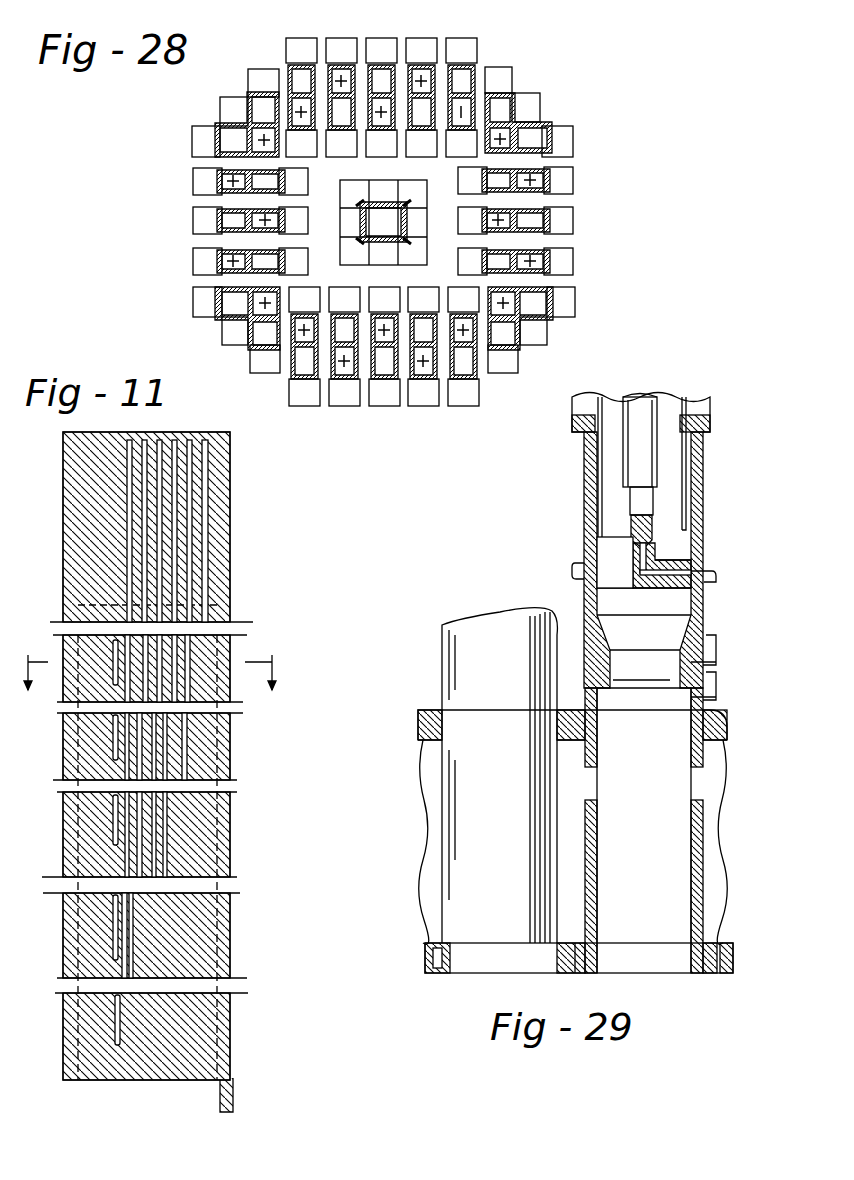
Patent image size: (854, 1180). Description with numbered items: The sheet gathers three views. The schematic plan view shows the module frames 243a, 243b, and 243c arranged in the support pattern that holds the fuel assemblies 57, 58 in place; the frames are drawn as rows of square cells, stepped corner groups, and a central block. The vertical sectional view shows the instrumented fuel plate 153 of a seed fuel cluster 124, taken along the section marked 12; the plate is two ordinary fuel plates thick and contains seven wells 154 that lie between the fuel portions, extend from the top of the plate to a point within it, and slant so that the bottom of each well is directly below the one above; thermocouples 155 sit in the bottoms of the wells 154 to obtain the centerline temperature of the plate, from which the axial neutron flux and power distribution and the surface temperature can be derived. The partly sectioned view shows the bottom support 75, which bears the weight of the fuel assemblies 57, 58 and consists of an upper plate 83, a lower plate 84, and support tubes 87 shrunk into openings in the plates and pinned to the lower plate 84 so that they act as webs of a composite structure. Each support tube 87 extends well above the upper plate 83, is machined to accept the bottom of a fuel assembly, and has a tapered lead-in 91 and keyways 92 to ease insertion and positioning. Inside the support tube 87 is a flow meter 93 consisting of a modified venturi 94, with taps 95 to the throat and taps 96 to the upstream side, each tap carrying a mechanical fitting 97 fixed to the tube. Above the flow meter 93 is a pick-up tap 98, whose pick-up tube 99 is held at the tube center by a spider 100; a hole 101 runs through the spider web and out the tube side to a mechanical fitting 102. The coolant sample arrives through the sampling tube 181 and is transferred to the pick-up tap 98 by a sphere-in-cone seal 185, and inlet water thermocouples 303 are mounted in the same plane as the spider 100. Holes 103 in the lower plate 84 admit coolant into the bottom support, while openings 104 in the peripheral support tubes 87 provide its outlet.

In FIG. 28, the module frame 243a is at (417, 50).
In FIG. 28, the module frame 243b is at (247, 113).
In FIG. 28, the module frame 243c is at (378, 204).
In FIG. 11, the seed fuel cluster 124 is at (182, 772).
In FIG. 11, the instrumented fuel plate 153 is at (240, 485).
In FIG. 11, the wells 154 is at (150, 545).
In FIG. 11, the thermocouples 155 is at (113, 815).
In FIG. 11, the section line 12 is at (145, 688).
In FIG. 29, the fuel assembly 57 is at (705, 398).
In FIG. 29, the fuel assembly 58 is at (715, 372).
In FIG. 29, the sampling tube 181 is at (640, 400).
In FIG. 29, the tapered lead-in 91 is at (584, 448).
In FIG. 29, the keyways 92 is at (703, 452).
In FIG. 29, the sphere-in-cone seal 185 is at (662, 530).
In FIG. 29, the pick-up tap 98 is at (665, 556).
In FIG. 29, the pick-up tube 99 is at (637, 560).
In FIG. 29, the hole 101 is at (691, 572).
In FIG. 29, the mechanical fitting 102 is at (704, 581).
In FIG. 29, the thermocouples 303 is at (573, 574).
In FIG. 29, the spider 100 is at (640, 590).
In FIG. 29, the support tubes 87 is at (703, 620).
In FIG. 29, the mechanical fittings 97 is at (716, 648).
In FIG. 29, the taps 95 is at (691, 664).
In FIG. 29, the taps 96 is at (716, 680).
In FIG. 29, the modified venturi 94 is at (657, 688).
In FIG. 29, the flow meter 93 is at (636, 698).
In FIG. 29, the bottom support 75 is at (434, 688).
In FIG. 29, the upper plate 83 is at (418, 727).
In FIG. 29, the openings 104 is at (691, 782).
In FIG. 29, the holes 103 is at (430, 968).
In FIG. 29, the lower plate 84 is at (440, 975).